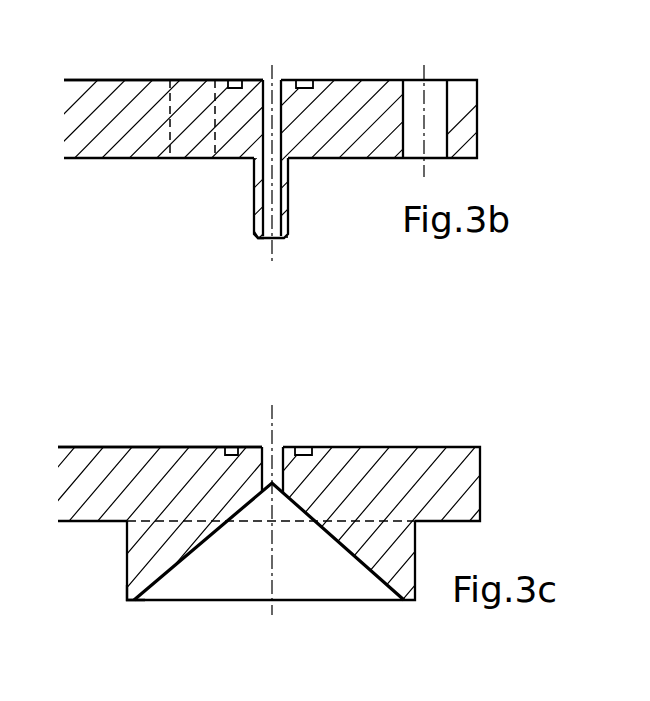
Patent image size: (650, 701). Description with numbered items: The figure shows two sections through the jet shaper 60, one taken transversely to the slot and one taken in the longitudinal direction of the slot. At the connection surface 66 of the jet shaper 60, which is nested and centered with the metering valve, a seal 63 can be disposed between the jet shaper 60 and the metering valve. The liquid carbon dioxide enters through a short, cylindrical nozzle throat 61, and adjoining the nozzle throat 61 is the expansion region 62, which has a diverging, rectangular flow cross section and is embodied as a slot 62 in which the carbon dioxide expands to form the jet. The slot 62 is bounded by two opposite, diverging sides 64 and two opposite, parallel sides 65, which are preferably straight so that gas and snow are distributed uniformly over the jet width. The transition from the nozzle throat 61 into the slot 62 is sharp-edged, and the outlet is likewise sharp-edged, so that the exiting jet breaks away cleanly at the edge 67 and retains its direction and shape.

In FIG. 3B, the jet shaper 60 is at (462, 123).
In FIG. 3C, the jet shaper 60 is at (460, 482).
In FIG. 3B, the nozzle throat 61 is at (275, 80).
In FIG. 3C, the nozzle throat 61 is at (295, 447).
In FIG. 3B, the expansion region 62 is at (265, 204).
In FIG. 3C, the expansion region 62 is at (222, 553).
In FIG. 3B, the seal 63 is at (232, 82).
In FIG. 3C, the seal 63 is at (232, 447).
In FIG. 3C, the diverging sides 64 is at (173, 570).
In FIG. 3B, the parallel sides 65 is at (260, 234).
In FIG. 3B, the connection surface 66 is at (125, 80).
In FIG. 3C, the connection surface 66 is at (98, 447).
In FIG. 3C, the edge 67 is at (137, 607).